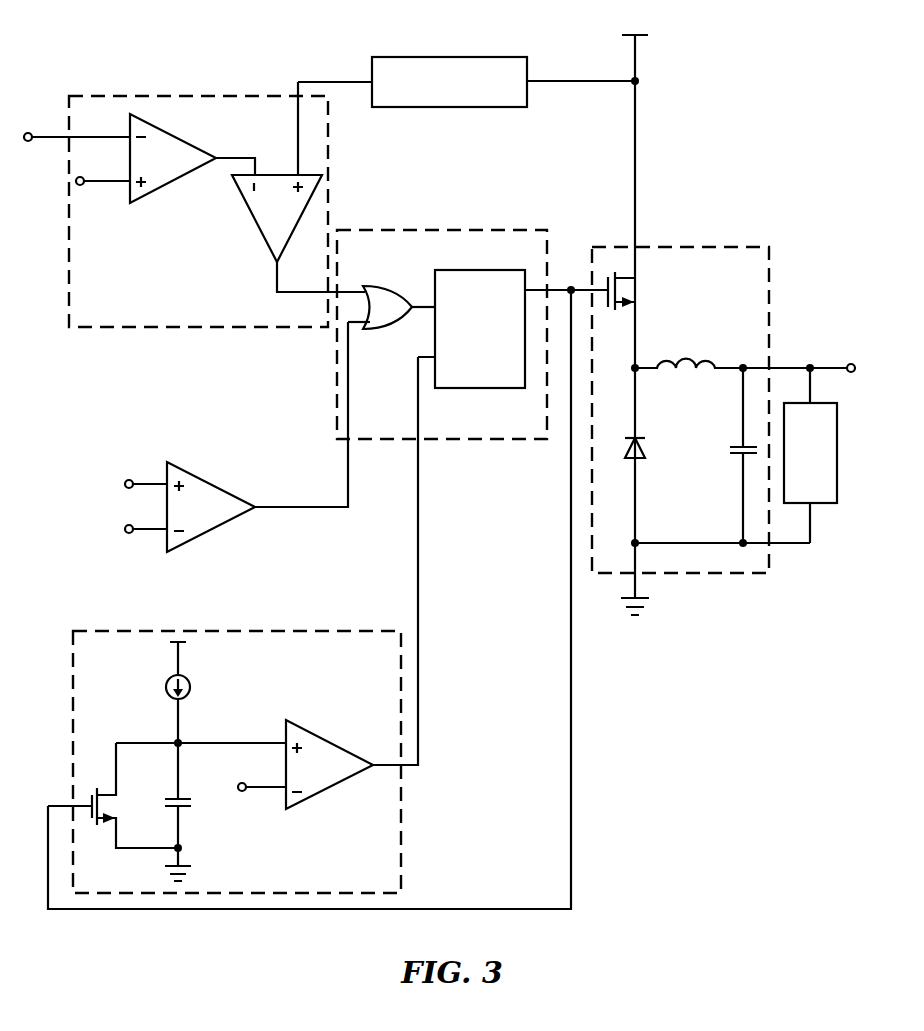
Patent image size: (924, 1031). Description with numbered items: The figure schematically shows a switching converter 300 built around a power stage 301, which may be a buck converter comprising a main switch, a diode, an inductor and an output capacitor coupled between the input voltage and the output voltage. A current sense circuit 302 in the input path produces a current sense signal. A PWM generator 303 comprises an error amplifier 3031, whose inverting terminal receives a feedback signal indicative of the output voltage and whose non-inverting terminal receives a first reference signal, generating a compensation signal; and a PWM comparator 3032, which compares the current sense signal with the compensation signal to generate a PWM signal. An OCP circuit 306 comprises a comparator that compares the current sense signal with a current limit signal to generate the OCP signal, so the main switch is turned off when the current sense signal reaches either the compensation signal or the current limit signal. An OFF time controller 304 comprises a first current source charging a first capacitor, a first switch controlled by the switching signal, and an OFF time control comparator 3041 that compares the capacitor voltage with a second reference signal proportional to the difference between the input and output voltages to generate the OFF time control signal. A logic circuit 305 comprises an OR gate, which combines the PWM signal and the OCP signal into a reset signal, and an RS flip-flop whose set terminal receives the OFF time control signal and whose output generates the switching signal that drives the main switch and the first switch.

The switching converter 300 is at (802, 78).
The power stage 301 is at (688, 238).
The current sense circuit 302 is at (446, 57).
The PWM generator 303 is at (226, 96).
The error amplifier 3031 is at (173, 158).
The PWM comparator 3032 is at (277, 218).
The OFF time controller 304 is at (360, 631).
The OFF time control comparator 3041 is at (329, 764).
The logic circuit 305 is at (465, 441).
The OCP circuit 306 is at (222, 489).